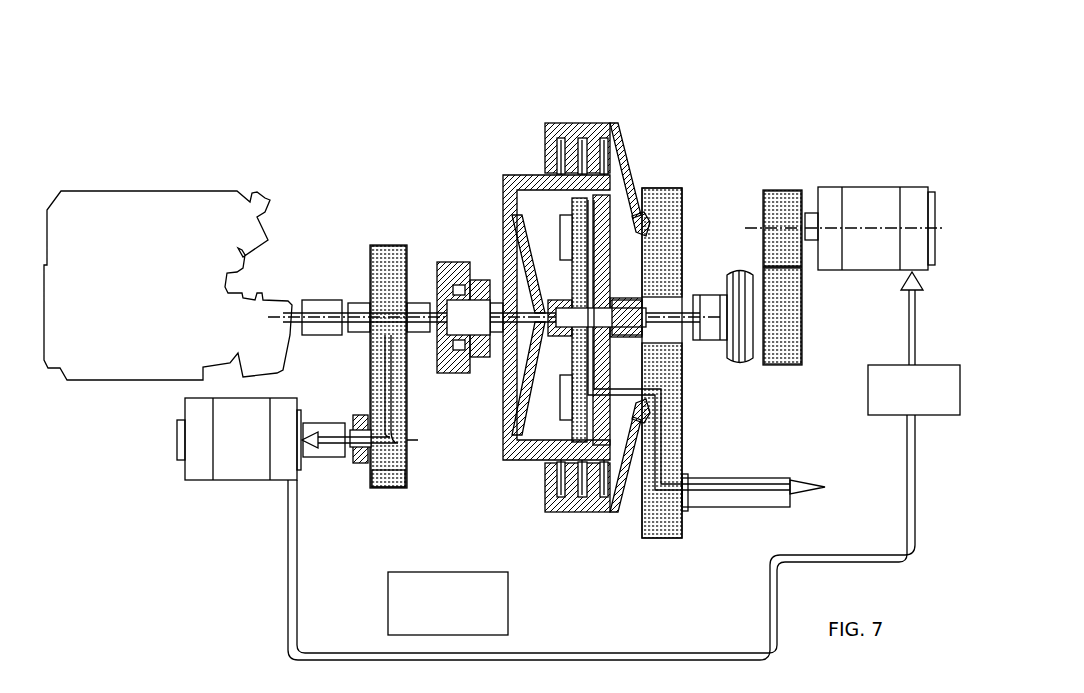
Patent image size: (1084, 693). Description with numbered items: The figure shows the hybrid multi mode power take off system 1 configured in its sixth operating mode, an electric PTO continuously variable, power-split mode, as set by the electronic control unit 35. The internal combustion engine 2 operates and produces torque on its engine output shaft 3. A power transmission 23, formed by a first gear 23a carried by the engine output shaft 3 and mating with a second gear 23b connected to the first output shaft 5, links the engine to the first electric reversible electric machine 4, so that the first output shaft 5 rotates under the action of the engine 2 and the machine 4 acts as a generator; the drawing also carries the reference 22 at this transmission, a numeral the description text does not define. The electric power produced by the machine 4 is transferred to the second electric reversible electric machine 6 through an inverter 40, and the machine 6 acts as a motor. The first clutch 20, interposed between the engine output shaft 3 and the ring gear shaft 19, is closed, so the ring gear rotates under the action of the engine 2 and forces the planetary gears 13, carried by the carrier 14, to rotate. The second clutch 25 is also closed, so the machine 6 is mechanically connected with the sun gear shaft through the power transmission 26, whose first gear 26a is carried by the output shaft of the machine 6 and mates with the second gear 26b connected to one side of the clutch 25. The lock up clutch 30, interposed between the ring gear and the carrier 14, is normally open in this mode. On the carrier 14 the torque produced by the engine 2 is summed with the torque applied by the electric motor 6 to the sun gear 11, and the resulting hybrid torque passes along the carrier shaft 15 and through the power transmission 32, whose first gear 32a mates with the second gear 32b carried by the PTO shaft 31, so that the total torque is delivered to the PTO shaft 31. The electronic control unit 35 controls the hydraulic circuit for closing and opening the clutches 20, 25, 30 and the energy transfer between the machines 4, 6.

The hybrid multi mode power take off system 1 is at (745, 125).
The internal combustion engine 2 is at (131, 210).
The engine output shaft 3 is at (352, 292).
The first electric reversible electric machine 4 is at (252, 460).
The first output shaft 5 is at (322, 420).
The second electric reversible electric machine 6 is at (872, 242).
The sun gear 11 is at (585, 342).
The planetary gears 13 is at (578, 226).
The carrier 14 is at (638, 175).
The carrier shaft 15 is at (690, 328).
The ring gear shaft 19 is at (505, 335).
The first clutch 20 is at (468, 260).
The belt drive 22 is at (345, 497).
The power transmission 23 is at (420, 405).
The first gear 23a is at (386, 250).
The second gear 23b is at (386, 486).
The second clutch 25 is at (735, 262).
The power transmission 26 is at (808, 272).
The first gear 26a is at (780, 203).
The second gear 26b is at (786, 347).
The lock up clutch 30 is at (538, 150).
The PTO shaft 31 is at (737, 500).
The power transmission 32 is at (696, 440).
The first gear 32a is at (655, 205).
The second gear 32b is at (652, 512).
The electronic control unit 35 is at (405, 607).
The inverter 40 is at (903, 392).